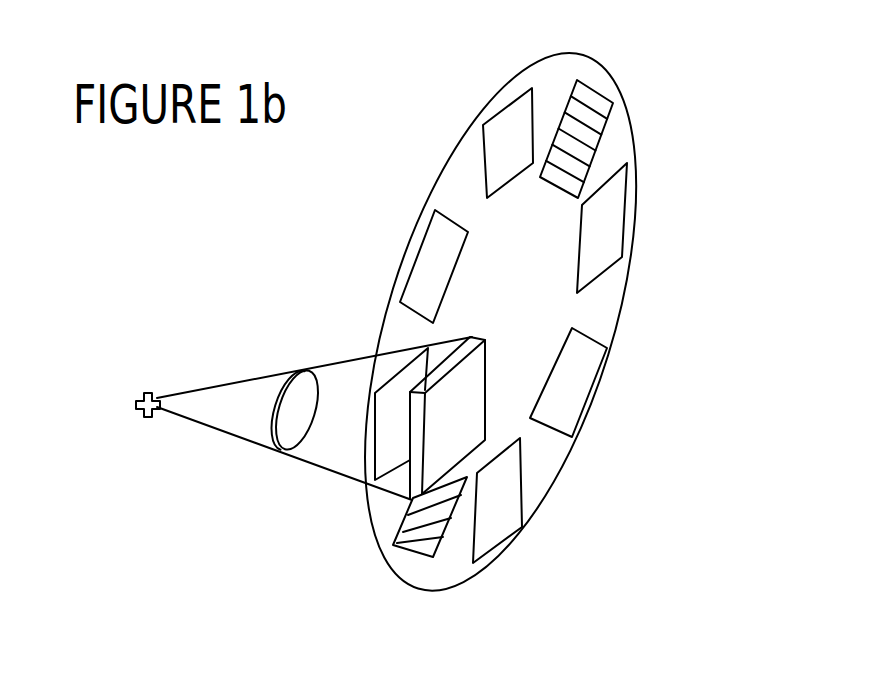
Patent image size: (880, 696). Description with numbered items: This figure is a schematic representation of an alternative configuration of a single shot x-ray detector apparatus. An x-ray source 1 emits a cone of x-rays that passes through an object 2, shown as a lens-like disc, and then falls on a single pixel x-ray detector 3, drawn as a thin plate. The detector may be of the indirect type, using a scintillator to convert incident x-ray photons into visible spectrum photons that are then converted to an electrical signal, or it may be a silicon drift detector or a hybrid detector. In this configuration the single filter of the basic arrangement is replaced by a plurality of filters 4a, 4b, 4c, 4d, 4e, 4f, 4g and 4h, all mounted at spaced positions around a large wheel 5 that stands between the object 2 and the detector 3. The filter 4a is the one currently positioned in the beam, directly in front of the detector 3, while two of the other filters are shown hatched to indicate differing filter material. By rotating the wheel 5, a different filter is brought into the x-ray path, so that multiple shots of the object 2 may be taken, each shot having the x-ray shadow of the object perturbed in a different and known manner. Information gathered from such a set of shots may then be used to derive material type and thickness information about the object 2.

The x-ray source 1 is at (145, 398).
The object 2 is at (297, 372).
The single pixel x-ray detector 3 is at (467, 400).
The filter 4a is at (395, 393).
The filter 4b is at (433, 237).
The filter 4c is at (498, 112).
The filter 4d is at (600, 107).
The filter 4e is at (610, 215).
The filter 4f is at (573, 388).
The filter 4g is at (503, 515).
The filter 4h is at (430, 553).
The wheel 5 is at (450, 157).